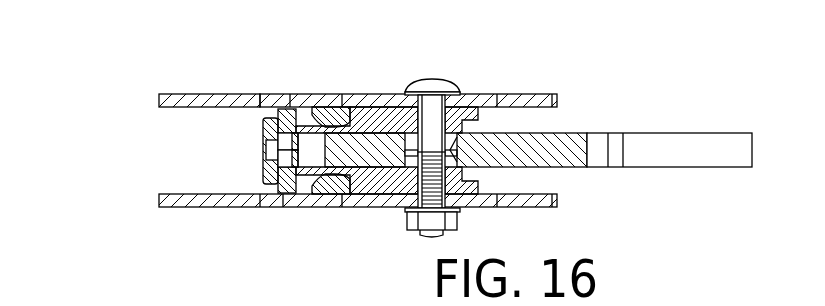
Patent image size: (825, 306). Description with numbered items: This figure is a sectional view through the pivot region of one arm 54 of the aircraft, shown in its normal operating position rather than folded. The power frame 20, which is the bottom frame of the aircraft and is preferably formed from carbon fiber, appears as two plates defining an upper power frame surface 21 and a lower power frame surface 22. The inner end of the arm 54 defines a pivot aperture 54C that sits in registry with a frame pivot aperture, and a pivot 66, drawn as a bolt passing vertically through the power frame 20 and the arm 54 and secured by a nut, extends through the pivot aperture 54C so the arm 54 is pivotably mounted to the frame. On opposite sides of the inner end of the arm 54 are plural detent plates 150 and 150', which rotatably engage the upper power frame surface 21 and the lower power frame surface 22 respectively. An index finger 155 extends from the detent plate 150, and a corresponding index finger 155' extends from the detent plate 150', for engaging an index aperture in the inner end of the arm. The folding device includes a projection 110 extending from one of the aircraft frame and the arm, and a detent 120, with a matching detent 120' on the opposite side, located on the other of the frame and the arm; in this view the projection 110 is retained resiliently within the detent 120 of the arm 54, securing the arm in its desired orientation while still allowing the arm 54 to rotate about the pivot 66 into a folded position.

The power frame 20 is at (158, 101).
The upper power frame surface 21 is at (193, 95).
The lower power frame surface 22 is at (157, 203).
The arm 54 is at (678, 134).
The pivot aperture 54C is at (457, 150).
The pivot 66 is at (437, 85).
The projection 110 is at (320, 118).
The detent 120 is at (313, 84).
The detent 120' is at (296, 216).
The detent plate 150 is at (387, 86).
The detent plate 150' is at (387, 218).
The index finger 155 is at (261, 92).
The index finger 155' is at (237, 200).